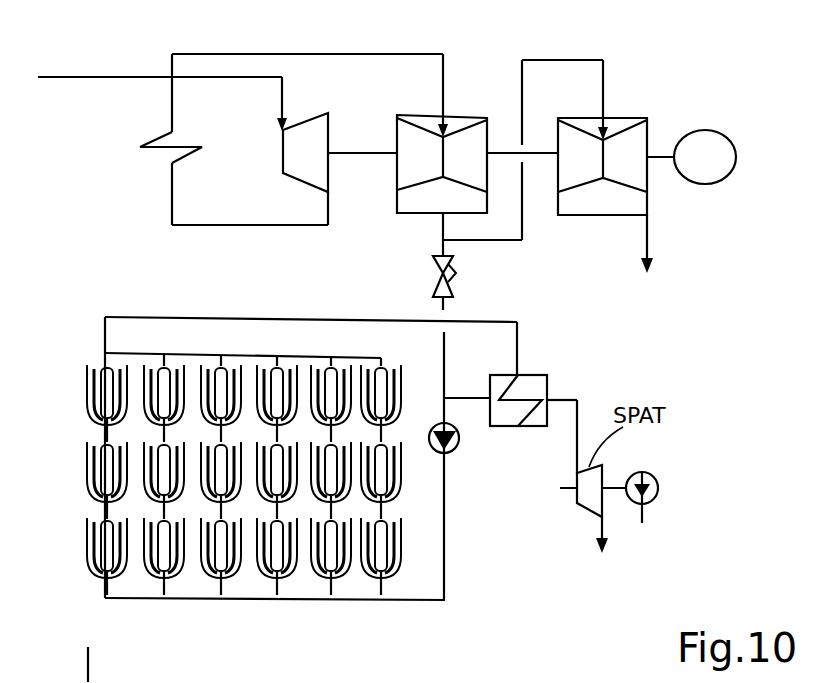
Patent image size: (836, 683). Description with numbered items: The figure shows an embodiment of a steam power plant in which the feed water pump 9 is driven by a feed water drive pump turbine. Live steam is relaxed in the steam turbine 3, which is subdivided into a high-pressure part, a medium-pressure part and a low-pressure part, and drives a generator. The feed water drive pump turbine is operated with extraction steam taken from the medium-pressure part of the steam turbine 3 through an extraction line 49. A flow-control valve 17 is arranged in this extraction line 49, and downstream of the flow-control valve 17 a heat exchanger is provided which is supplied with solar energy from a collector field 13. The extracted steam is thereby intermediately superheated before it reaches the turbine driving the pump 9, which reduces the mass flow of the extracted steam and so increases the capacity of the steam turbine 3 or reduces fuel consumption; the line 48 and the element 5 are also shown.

The steam turbine 3 is at (465, 65).
The flow-control valve 17 is at (452, 290).
The collector field 13 is at (252, 618).
The extraction line 49 is at (535, 376).
The steam line 48 is at (572, 422).
The feed water pump 9 is at (658, 480).
The feed line 5 is at (58, 664).